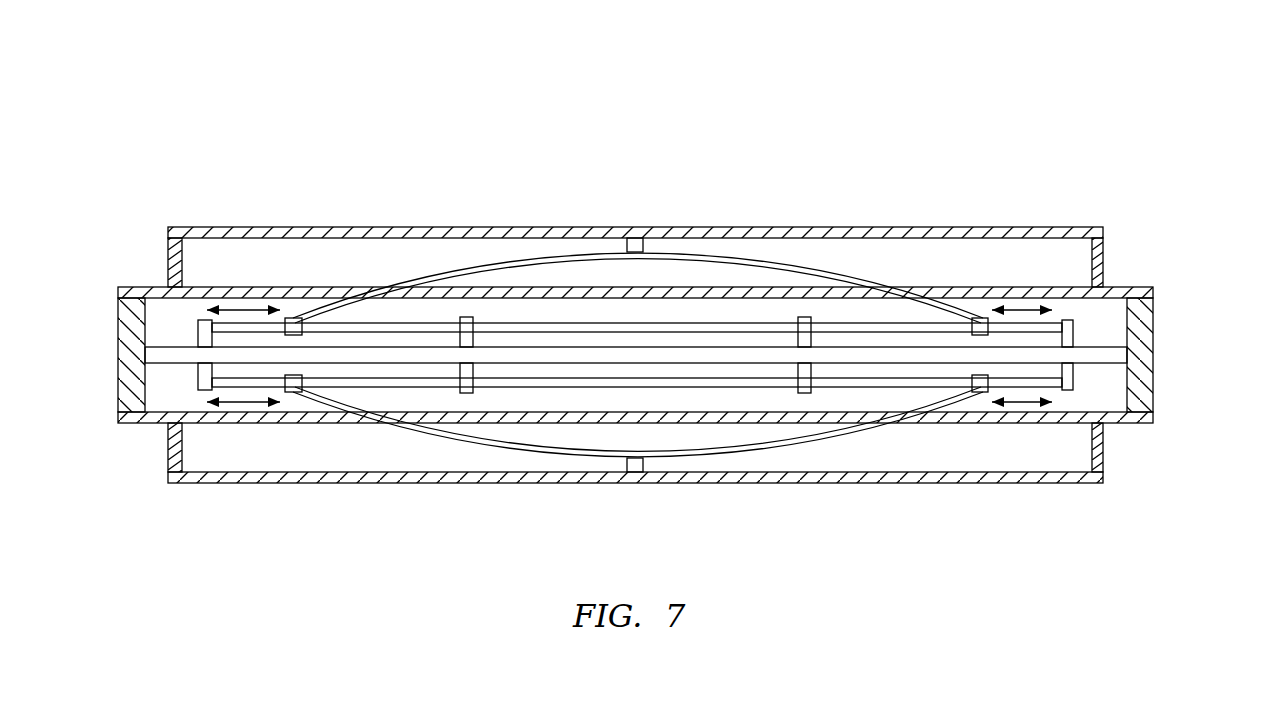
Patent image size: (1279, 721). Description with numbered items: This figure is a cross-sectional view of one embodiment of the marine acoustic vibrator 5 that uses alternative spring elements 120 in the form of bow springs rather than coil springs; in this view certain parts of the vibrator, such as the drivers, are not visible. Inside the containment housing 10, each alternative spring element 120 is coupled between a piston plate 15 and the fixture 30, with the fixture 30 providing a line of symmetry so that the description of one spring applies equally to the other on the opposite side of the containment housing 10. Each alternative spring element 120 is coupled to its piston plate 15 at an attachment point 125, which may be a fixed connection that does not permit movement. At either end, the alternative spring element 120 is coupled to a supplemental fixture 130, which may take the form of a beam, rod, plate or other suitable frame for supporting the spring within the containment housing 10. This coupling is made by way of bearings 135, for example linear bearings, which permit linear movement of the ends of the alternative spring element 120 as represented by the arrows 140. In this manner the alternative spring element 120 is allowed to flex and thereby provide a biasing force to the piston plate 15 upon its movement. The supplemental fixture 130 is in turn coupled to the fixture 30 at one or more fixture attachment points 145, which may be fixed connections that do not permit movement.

The marine acoustic vibrator 5 is at (1147, 90).
The containment housing 10 is at (1155, 318).
The piston plate 15 is at (850, 228).
The fixture 30 is at (1127, 382).
The alternative spring element 120 is at (705, 255).
The attachment point 125 is at (632, 238).
The supplemental fixture 130 is at (1055, 325).
The bearings 135 is at (292, 318).
The arrows 140 is at (235, 308).
The fixture attachment points 145 is at (197, 328).